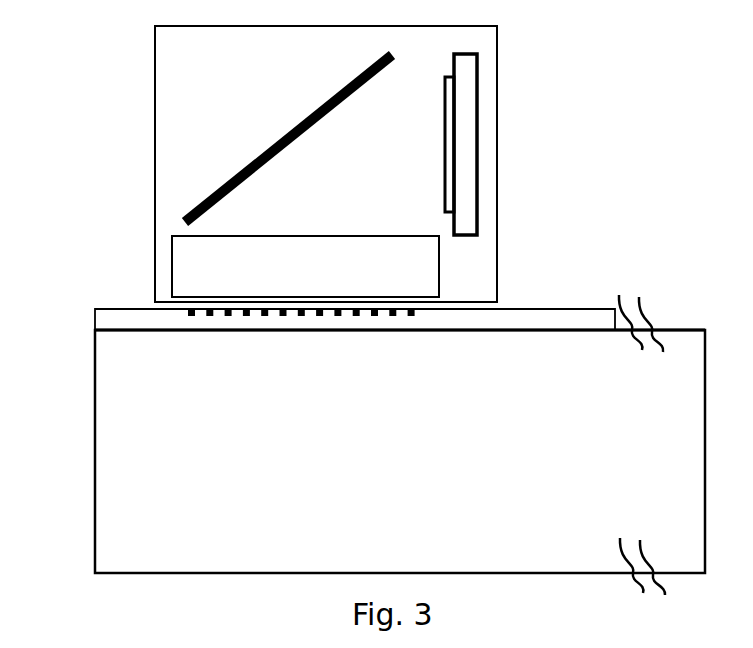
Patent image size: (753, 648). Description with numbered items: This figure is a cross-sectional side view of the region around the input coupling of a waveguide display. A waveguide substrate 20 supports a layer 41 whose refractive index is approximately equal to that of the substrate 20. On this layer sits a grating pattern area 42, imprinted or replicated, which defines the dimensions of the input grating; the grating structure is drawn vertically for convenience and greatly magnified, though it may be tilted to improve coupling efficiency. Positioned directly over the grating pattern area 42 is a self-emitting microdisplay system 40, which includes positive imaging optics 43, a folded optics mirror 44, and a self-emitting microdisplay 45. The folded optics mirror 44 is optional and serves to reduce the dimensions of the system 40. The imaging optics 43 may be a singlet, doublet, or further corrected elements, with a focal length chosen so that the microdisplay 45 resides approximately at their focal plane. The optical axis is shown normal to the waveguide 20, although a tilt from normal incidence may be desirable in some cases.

The waveguide substrate 20 is at (215, 502).
The self-emitting microdisplay system 40 is at (497, 114).
The layer 41 is at (128, 316).
The grating pattern area 42 is at (430, 342).
The positive imaging optics 43 is at (400, 257).
The folded optics mirror 44 is at (320, 105).
The self-emitting microdisplay 45 is at (447, 151).